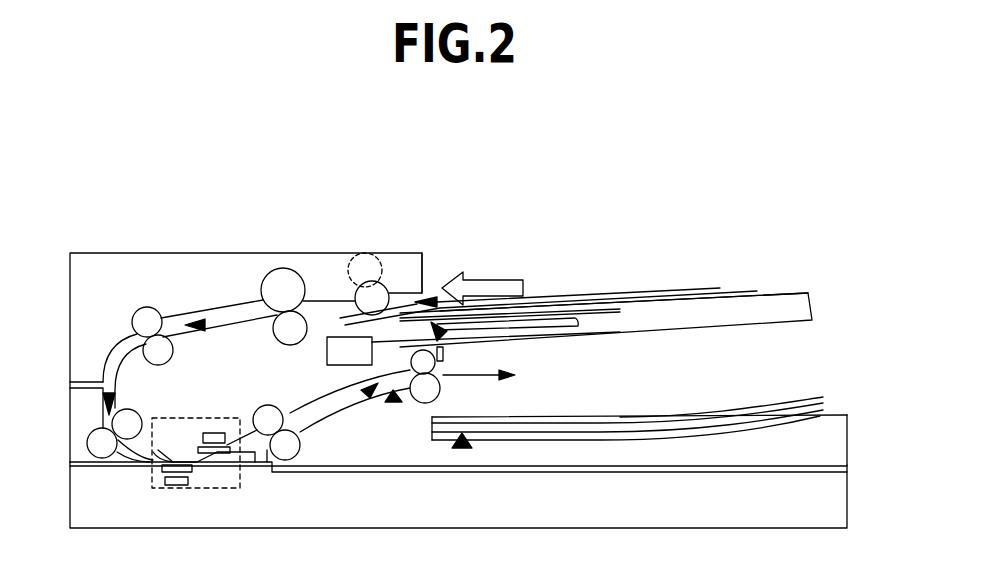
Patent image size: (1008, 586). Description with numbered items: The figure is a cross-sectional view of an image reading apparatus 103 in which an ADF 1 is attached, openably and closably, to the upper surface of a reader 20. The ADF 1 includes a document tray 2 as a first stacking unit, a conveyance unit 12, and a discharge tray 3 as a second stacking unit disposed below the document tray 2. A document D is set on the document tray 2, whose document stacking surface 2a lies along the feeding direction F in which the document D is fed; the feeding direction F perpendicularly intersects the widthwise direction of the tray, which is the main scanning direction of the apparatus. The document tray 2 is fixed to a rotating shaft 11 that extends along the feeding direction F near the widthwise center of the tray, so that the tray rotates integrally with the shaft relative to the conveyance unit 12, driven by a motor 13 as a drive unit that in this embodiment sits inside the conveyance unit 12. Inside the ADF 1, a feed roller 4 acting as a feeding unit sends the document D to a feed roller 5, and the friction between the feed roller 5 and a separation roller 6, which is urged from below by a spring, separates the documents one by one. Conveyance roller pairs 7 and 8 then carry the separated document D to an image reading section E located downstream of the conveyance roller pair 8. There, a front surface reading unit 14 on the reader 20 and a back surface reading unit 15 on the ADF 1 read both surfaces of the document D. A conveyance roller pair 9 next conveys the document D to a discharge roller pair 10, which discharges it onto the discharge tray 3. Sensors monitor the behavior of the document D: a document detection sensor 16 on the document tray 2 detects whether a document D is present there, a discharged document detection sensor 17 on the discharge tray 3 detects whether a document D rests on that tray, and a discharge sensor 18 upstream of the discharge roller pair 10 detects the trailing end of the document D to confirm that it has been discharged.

The ADF 1 is at (626, 172).
The document tray 2 is at (813, 305).
The document stacking surface 2a is at (790, 293).
The discharge tray 3 is at (837, 442).
The feed roller 4 is at (382, 279).
The feed roller 5 is at (283, 268).
The separation roller 6 is at (290, 346).
The conveyance roller pair 7 is at (150, 307).
The conveyance roller pair 8 is at (88, 443).
The conveyance roller pair 9 is at (263, 400).
The discharge roller pair 10 is at (423, 403).
The rotating shaft 11 is at (580, 325).
The conveyance unit 12 is at (82, 283).
The motor 13 is at (335, 367).
The front surface reading unit 14 is at (177, 487).
The back surface reading unit 15 is at (215, 432).
The document detection sensor 16 is at (447, 330).
The discharged document detection sensor 17 is at (460, 449).
The discharge sensor 18 is at (388, 403).
The reader 20 is at (837, 498).
The image reading apparatus 103 is at (424, 274).
The document D is at (613, 295).
The image reading section E is at (152, 487).
The feeding direction F is at (482, 278).